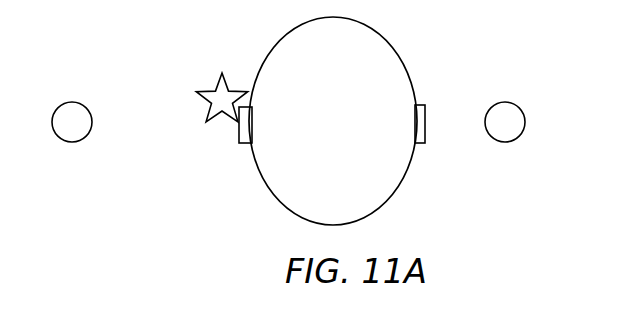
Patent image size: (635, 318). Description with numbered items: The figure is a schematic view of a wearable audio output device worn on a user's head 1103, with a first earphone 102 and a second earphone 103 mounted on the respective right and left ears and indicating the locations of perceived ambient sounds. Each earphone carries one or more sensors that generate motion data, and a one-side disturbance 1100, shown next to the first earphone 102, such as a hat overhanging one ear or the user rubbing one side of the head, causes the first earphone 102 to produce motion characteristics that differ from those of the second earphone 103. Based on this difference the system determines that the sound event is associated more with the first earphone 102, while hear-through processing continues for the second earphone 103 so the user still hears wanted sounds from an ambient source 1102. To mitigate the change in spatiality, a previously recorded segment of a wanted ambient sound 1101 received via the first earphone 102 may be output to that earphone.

The one-side disturbance 1100 is at (198, 91).
The wanted ambient sound 1101 is at (81, 140).
The ambient source 1102 is at (524, 130).
The user's head 1103 is at (395, 192).
The first earphone 102 is at (238, 122).
The second earphone 103 is at (425, 133).